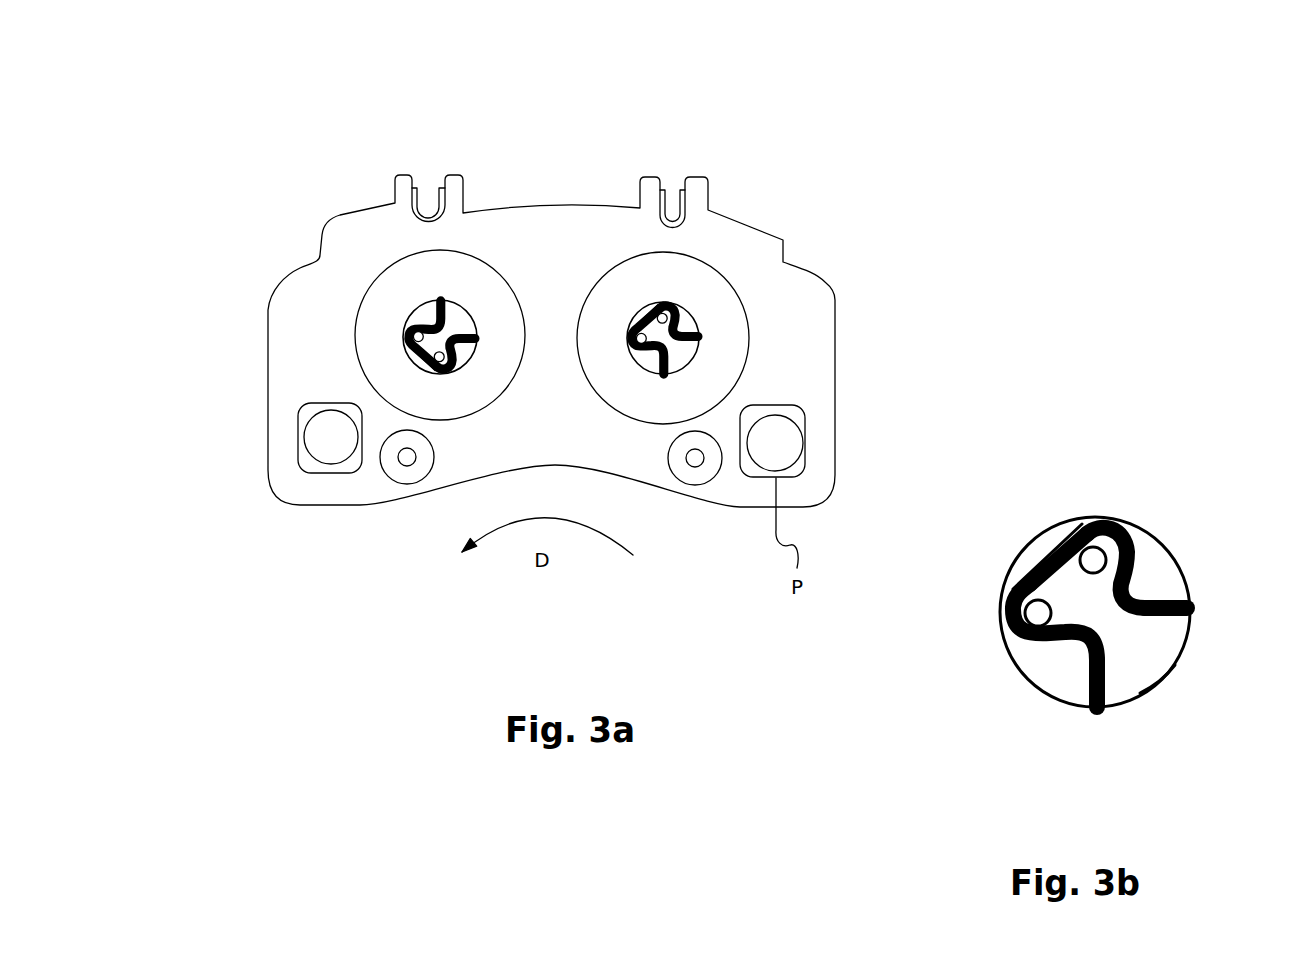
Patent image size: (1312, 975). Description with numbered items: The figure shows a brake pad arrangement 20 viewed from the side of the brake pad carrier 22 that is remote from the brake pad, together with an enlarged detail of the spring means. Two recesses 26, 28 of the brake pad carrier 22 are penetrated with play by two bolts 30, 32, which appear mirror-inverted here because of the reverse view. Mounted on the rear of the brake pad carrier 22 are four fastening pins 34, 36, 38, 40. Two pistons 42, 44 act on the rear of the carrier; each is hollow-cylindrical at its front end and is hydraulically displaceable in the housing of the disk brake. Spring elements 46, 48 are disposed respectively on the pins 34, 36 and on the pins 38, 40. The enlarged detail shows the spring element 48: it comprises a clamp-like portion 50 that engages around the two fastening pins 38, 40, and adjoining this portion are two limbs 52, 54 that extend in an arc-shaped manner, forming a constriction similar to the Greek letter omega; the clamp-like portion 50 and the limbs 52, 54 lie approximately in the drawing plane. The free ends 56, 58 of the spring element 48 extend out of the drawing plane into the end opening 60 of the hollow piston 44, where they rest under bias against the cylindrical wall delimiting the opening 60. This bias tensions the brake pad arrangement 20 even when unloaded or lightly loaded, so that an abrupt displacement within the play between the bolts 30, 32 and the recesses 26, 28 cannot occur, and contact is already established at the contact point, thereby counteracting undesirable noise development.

In FIG. 3A, the brake pad arrangement 20 is at (798, 282).
In FIG. 3A, the brake pad carrier 22 is at (710, 253).
In FIG. 3A, the recess 26 is at (798, 413).
In FIG. 3A, the recess 28 is at (347, 467).
In FIG. 3A, the bolt 30 is at (772, 452).
In FIG. 3A, the bolt 32 is at (323, 447).
In FIG. 3A, the fastening pin 34 is at (407, 332).
In FIG. 3A, the fastening pin 36 is at (407, 352).
In FIG. 3A, the fastening pin 38 is at (633, 325).
In FIG. 3B, the fastening pin 38 is at (1000, 632).
In FIG. 3A, the fastening pin 40 is at (660, 305).
In FIG. 3B, the fastening pin 40 is at (1093, 556).
In FIG. 3A, the piston 42 is at (388, 273).
In FIG. 3A, the piston 44 is at (608, 373).
In FIG. 3A, the spring element 46 is at (442, 300).
In FIG. 3A, the spring element 48 is at (652, 378).
In FIG. 3B, the spring element 48 is at (1003, 581).
In FIG. 3B, the clamp-like portion 50 is at (1043, 557).
In FIG. 3B, the limb 52 is at (1077, 647).
In FIG. 3B, the limb 54 is at (1133, 597).
In FIG. 3B, the free end 56 is at (1099, 712).
In FIG. 3B, the free end 58 is at (1193, 615).
In FIG. 3B, the end opening 60 is at (1160, 683).